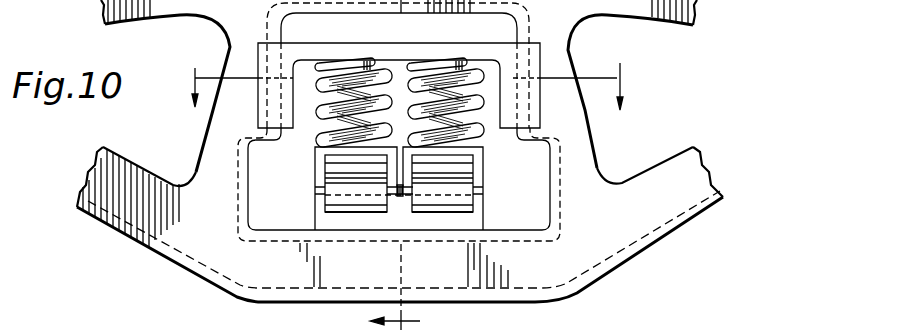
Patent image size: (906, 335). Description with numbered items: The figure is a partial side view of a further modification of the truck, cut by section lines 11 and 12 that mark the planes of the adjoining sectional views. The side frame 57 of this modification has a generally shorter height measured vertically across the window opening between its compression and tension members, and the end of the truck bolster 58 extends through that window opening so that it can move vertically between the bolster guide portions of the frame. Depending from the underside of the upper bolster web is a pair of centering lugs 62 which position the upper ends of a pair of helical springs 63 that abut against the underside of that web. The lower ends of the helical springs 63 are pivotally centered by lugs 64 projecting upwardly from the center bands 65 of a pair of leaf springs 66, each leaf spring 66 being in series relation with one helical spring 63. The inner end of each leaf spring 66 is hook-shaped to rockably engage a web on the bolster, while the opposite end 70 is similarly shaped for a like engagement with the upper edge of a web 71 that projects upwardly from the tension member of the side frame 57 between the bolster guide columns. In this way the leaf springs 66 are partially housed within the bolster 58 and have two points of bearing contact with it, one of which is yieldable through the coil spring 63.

The section line 11- 11 is at (378, 323).
The section line 12- 12 is at (410, 86).
The side frame 57 is at (583, 290).
The truck bolster 58 is at (311, 43).
The centering lugs 62 is at (363, 63).
The helical springs 63 is at (318, 118).
The lugs 64 is at (343, 128).
The center bands 65 is at (478, 170).
The leaf springs 66 is at (435, 170).
The opposite end of leaf spring 70 is at (463, 202).
The web 71 is at (470, 218).